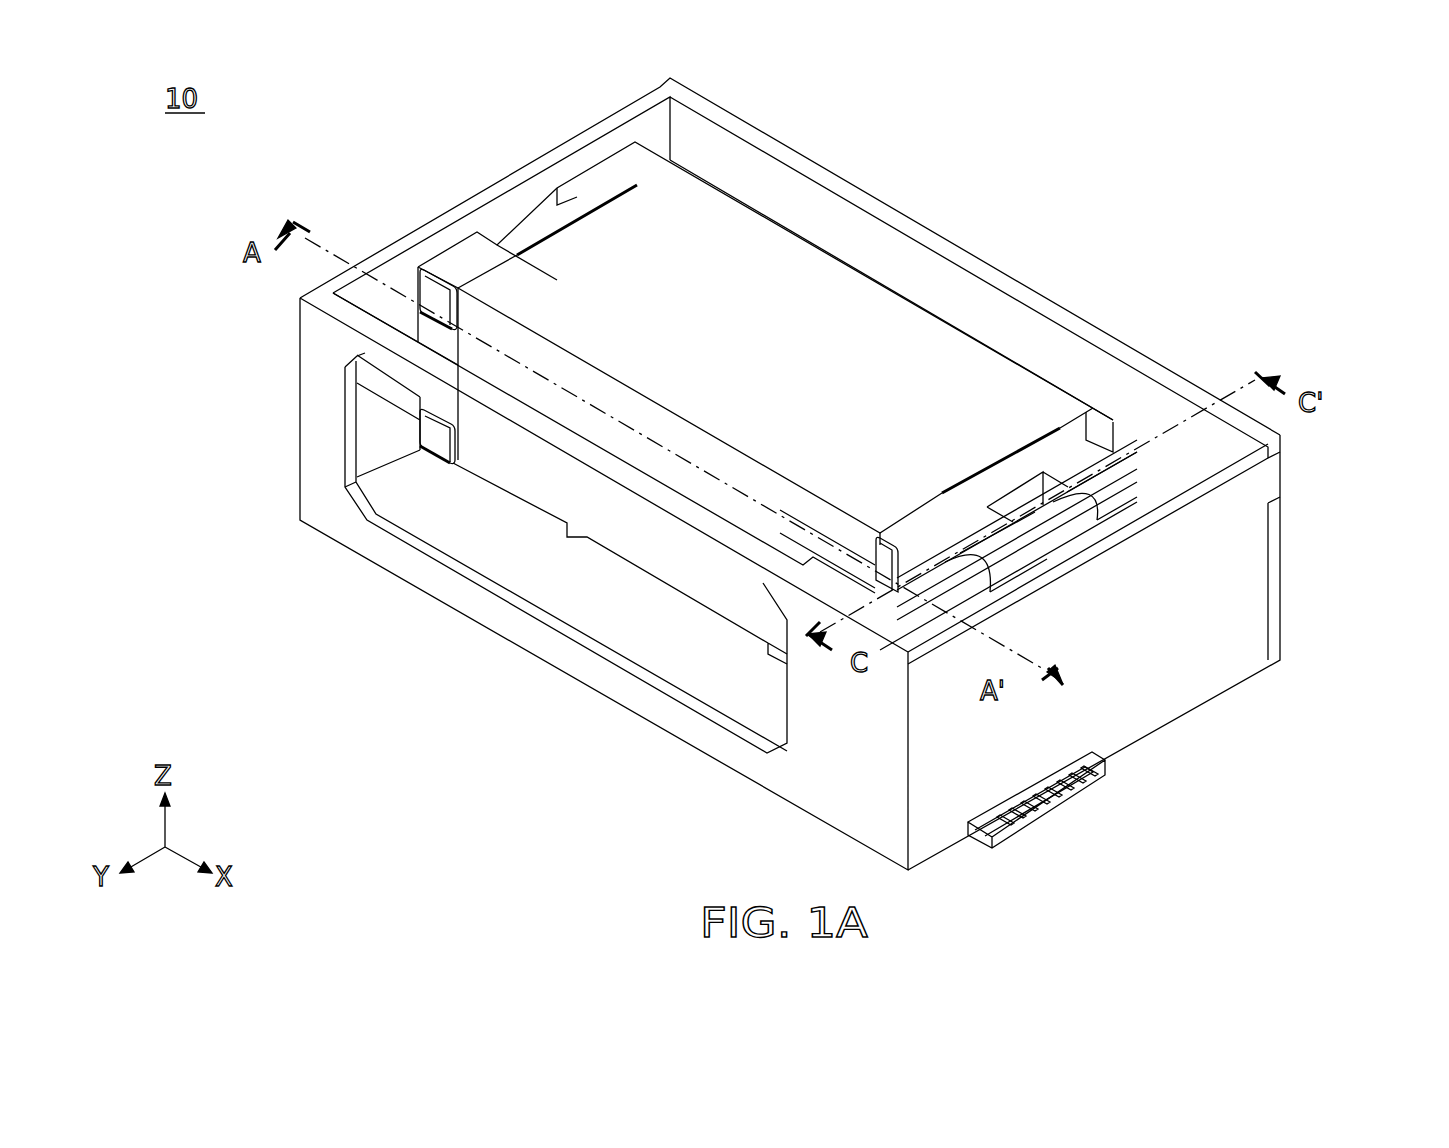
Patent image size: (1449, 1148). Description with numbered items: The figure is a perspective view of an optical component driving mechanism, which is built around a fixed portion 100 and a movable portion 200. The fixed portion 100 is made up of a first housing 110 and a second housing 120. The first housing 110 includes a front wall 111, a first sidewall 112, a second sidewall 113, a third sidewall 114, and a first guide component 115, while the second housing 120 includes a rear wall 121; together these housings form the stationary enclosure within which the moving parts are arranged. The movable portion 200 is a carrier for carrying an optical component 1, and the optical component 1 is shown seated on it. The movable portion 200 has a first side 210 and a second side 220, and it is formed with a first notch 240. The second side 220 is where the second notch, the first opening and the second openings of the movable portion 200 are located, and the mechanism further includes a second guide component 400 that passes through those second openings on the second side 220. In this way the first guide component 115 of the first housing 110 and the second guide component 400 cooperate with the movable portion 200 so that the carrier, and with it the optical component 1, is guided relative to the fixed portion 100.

The optical component 1 is at (800, 285).
The fixed portion 100 is at (1383, 800).
The first housing 110 is at (1215, 668).
The front wall 111 is at (330, 515).
The first sidewall 112 is at (453, 215).
The second sidewall 113 is at (1160, 705).
The third sidewall 114 is at (548, 580).
The first guide component 115 is at (365, 405).
The second housing 120 is at (935, 240).
The rear wall 121 is at (1048, 333).
The movable portion 200 is at (636, 168).
The first side 210 is at (453, 262).
The second side 220 is at (1062, 450).
The first notch 240 is at (533, 223).
The second guide component 400 is at (1170, 468).